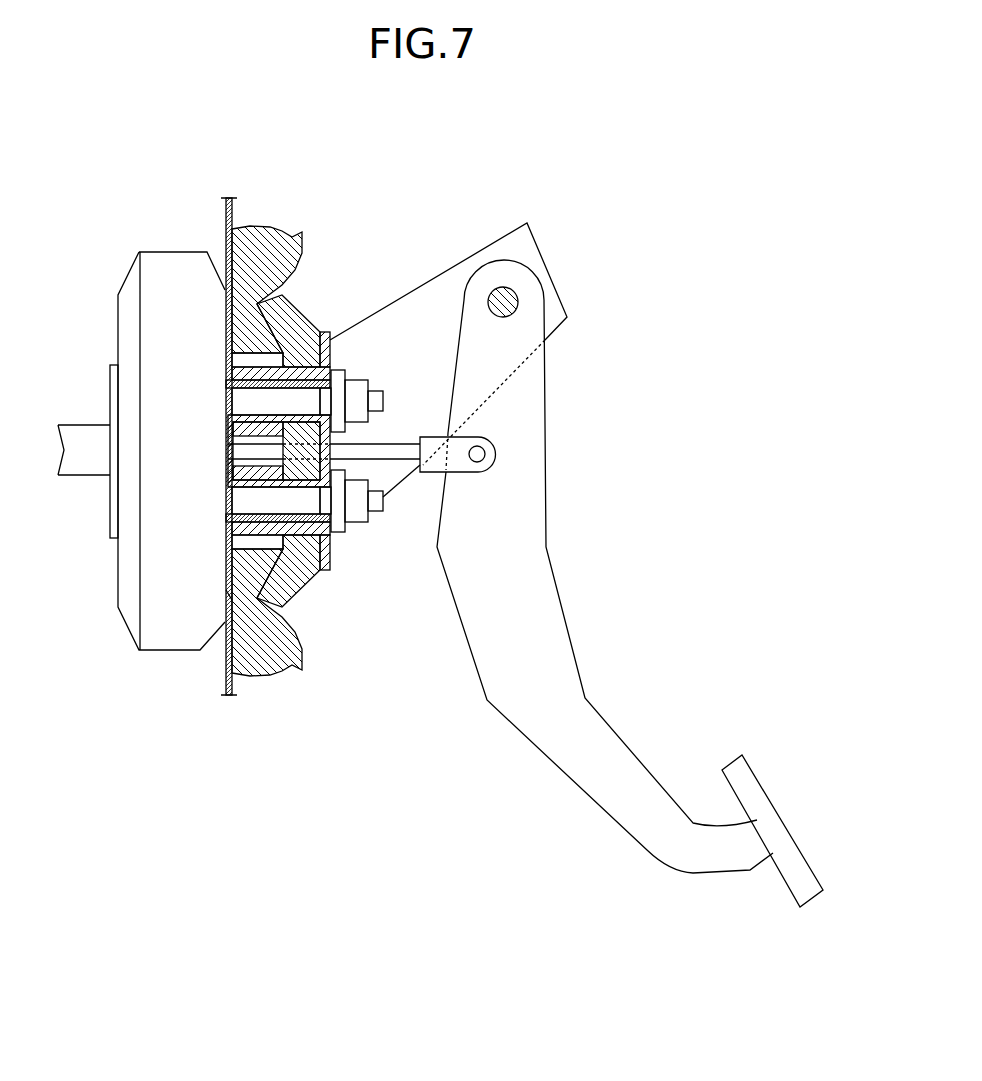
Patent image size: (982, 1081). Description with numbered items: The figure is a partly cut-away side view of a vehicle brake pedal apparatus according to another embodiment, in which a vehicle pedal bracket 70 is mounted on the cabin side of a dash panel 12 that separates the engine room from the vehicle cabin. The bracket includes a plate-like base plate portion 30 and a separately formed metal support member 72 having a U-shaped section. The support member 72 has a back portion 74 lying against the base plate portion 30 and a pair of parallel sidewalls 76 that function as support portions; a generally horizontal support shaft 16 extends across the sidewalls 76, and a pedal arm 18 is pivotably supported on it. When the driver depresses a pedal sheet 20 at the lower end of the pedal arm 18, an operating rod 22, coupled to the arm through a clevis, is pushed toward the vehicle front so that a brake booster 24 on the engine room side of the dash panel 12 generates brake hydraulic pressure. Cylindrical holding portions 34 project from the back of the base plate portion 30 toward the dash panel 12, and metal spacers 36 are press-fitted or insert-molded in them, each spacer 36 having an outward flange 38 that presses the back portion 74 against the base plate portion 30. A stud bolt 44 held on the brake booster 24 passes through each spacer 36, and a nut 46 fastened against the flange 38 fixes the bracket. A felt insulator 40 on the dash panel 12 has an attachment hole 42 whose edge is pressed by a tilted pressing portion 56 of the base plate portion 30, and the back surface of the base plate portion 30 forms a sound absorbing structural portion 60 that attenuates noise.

The dash panel 12 is at (226, 228).
The support shaft 16 is at (518, 298).
The pedal arm 18 is at (542, 583).
The pedal sheet 20 is at (767, 803).
The operating rod 22 is at (398, 455).
The brake booster 24 is at (150, 603).
The base plate portion 30 is at (322, 598).
The holding portion 34 is at (225, 374).
The spacer 36 is at (242, 410).
The flange 38 is at (335, 366).
The insulator 40 is at (253, 657).
The attachment hole 42 is at (277, 277).
The stud bolt 44 is at (300, 397).
The nut 46 is at (358, 383).
The pressing portion 56 is at (278, 337).
The sound absorbing structural portion 60 is at (225, 595).
The vehicle pedal bracket 70 is at (374, 192).
The support member 72 is at (395, 500).
The back portion 74 is at (337, 356).
The sidewall 76 is at (458, 285).